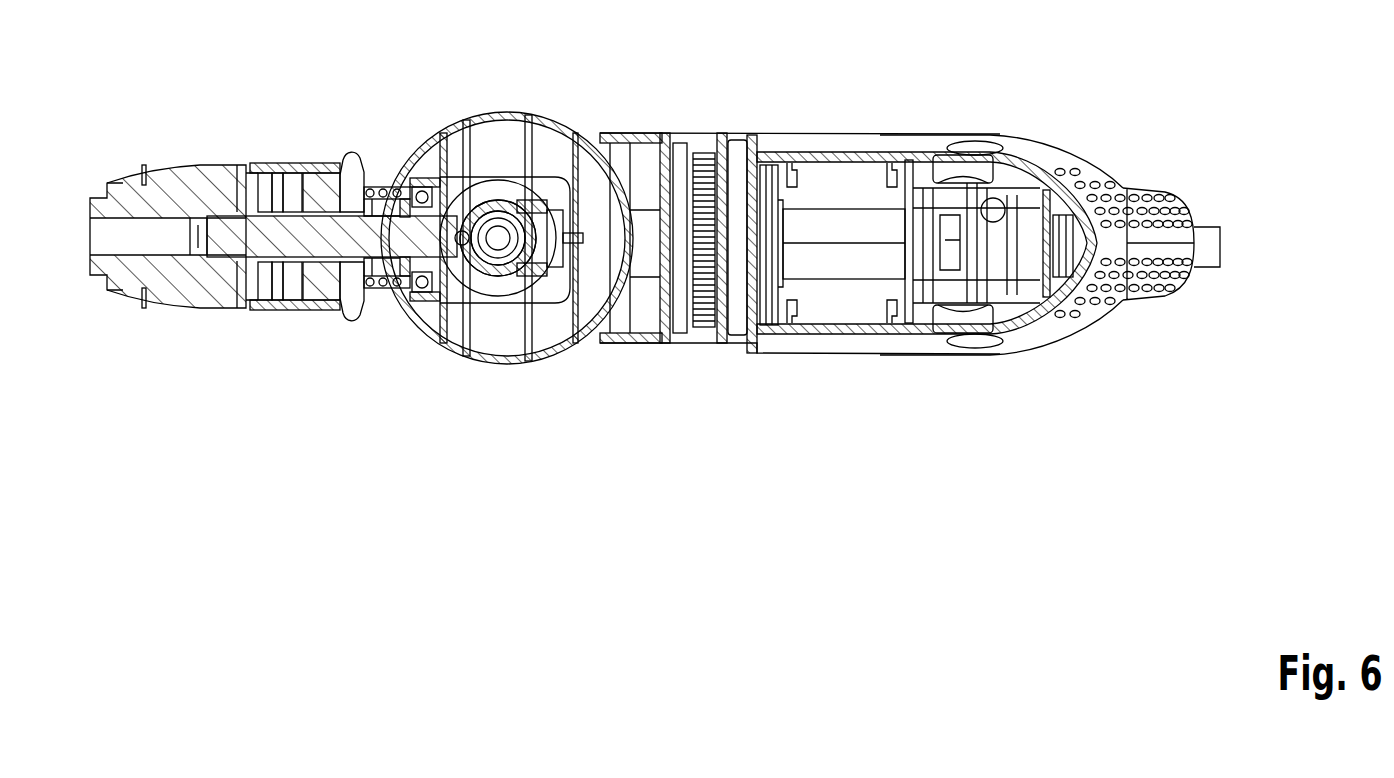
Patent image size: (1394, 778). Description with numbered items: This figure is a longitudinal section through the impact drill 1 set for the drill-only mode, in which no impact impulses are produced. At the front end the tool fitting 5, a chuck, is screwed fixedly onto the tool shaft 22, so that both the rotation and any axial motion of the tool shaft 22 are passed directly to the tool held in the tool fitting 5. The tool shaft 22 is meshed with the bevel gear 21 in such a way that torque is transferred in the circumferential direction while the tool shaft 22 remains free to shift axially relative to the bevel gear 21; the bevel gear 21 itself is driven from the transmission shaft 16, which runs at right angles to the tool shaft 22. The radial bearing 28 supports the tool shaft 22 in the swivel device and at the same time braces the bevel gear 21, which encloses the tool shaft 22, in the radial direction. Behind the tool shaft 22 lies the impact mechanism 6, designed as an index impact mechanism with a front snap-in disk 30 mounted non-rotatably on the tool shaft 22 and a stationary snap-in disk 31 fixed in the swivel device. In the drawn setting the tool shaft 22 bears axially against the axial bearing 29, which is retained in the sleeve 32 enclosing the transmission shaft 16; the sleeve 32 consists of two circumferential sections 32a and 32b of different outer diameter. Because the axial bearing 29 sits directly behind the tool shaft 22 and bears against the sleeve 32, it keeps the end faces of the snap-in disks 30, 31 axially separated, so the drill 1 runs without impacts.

The impact drill 1 is at (838, 355).
The tool fitting 5 is at (177, 295).
The impact mechanism 6 is at (368, 280).
The transmission shaft 16 is at (500, 240).
The bevel gear 21 is at (470, 264).
The tool shaft 22 is at (280, 245).
The radial bearing 28 is at (421, 191).
The axial bearing 29 is at (466, 232).
The front snap-in disk 30 is at (320, 292).
The stationary snap-in disk 31 is at (383, 208).
The sleeve 32 is at (504, 200).
The circumferential section 32a is at (530, 210).
The circumferential section 32b is at (492, 266).